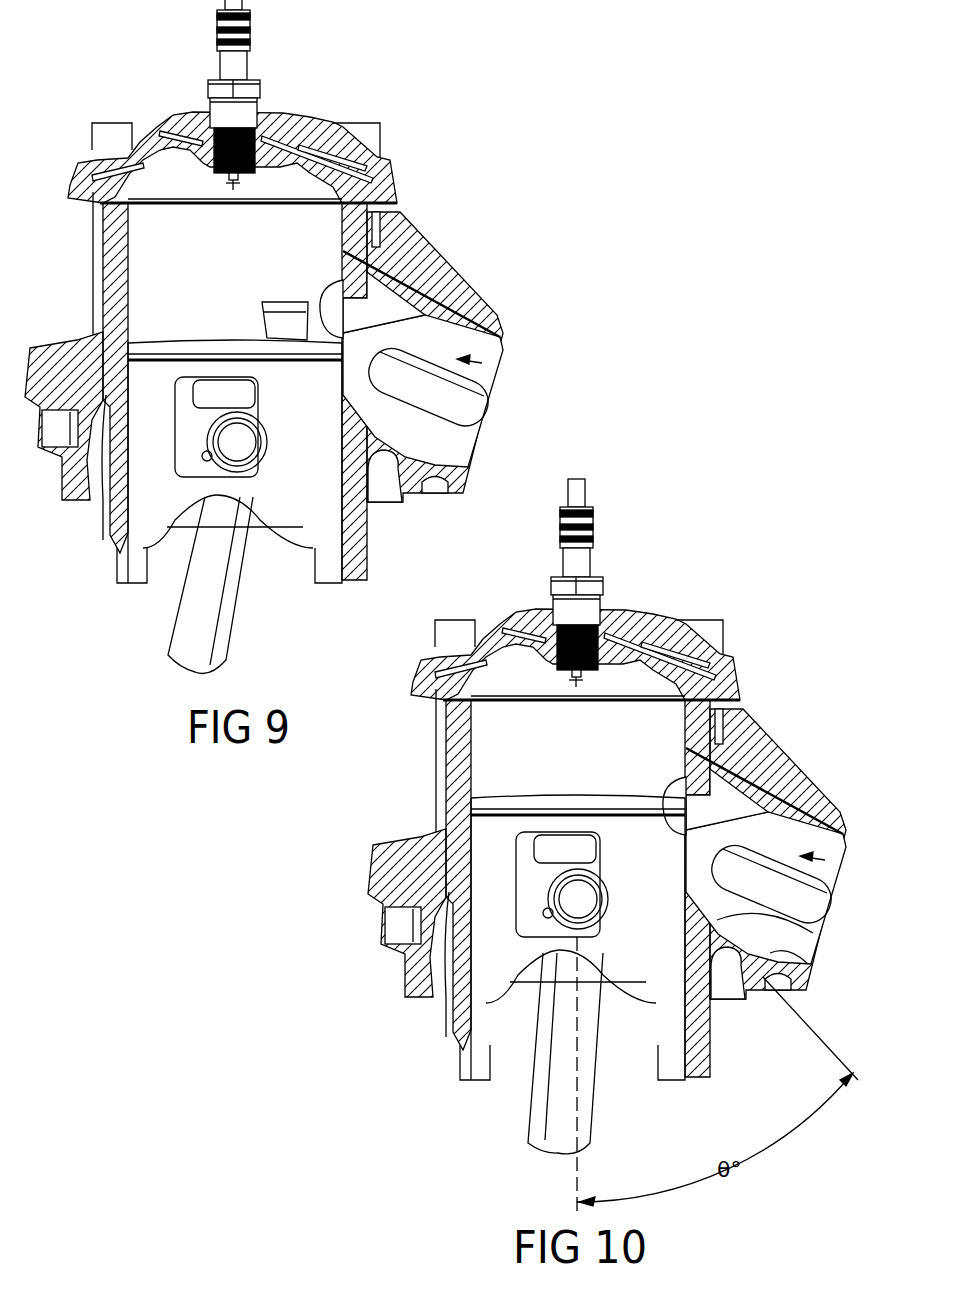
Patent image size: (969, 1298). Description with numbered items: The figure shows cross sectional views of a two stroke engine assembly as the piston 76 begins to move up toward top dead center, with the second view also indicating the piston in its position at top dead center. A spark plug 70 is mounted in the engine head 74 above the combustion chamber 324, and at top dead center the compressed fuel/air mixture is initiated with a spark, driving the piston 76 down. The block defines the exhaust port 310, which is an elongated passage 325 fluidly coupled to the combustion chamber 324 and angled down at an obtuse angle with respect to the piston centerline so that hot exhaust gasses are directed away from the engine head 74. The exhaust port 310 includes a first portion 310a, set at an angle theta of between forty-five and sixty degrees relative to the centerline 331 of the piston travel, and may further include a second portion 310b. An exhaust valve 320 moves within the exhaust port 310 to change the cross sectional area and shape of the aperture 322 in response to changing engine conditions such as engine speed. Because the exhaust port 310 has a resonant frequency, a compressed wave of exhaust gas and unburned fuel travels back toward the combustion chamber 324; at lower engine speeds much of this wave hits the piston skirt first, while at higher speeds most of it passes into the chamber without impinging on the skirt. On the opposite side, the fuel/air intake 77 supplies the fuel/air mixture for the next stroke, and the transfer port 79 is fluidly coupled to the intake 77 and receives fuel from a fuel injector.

In FIG. 9, the spark plug 70 is at (246, 62).
In FIG. 10, the spark plug 70 is at (604, 583).
In FIG. 9, the engine head 74 is at (298, 120).
In FIG. 10, the engine head 74 is at (575, 641).
In FIG. 9, the piston 76 is at (142, 528).
In FIG. 10, the piston 76 is at (531, 937).
In FIG. 9, the fuel/air intake 77 is at (97, 490).
In FIG. 10, the fuel/air intake 77 is at (408, 933).
In FIG. 9, the transfer port 79 is at (43, 437).
In FIG. 10, the transfer port 79 is at (383, 926).
In FIG. 9, the exhaust port 310 is at (482, 363).
In FIG. 10, the exhaust port 310 is at (791, 888).
In FIG. 10, the first portion 310a is at (801, 932).
In FIG. 10, the second portion 310b is at (833, 970).
In FIG. 9, the exhaust valve 320 is at (438, 243).
In FIG. 10, the exhaust valve 320 is at (781, 854).
In FIG. 9, the aperture 322 is at (335, 277).
In FIG. 10, the aperture 322 is at (769, 791).
In FIG. 9, the combustion chamber 324 is at (153, 222).
In FIG. 10, the combustion chamber 324 is at (536, 884).
In FIG. 9, the elongated passage 325 is at (450, 445).
In FIG. 10, the elongated passage 325 is at (819, 971).
In FIG. 10, the centerline 331 is at (532, 1077).